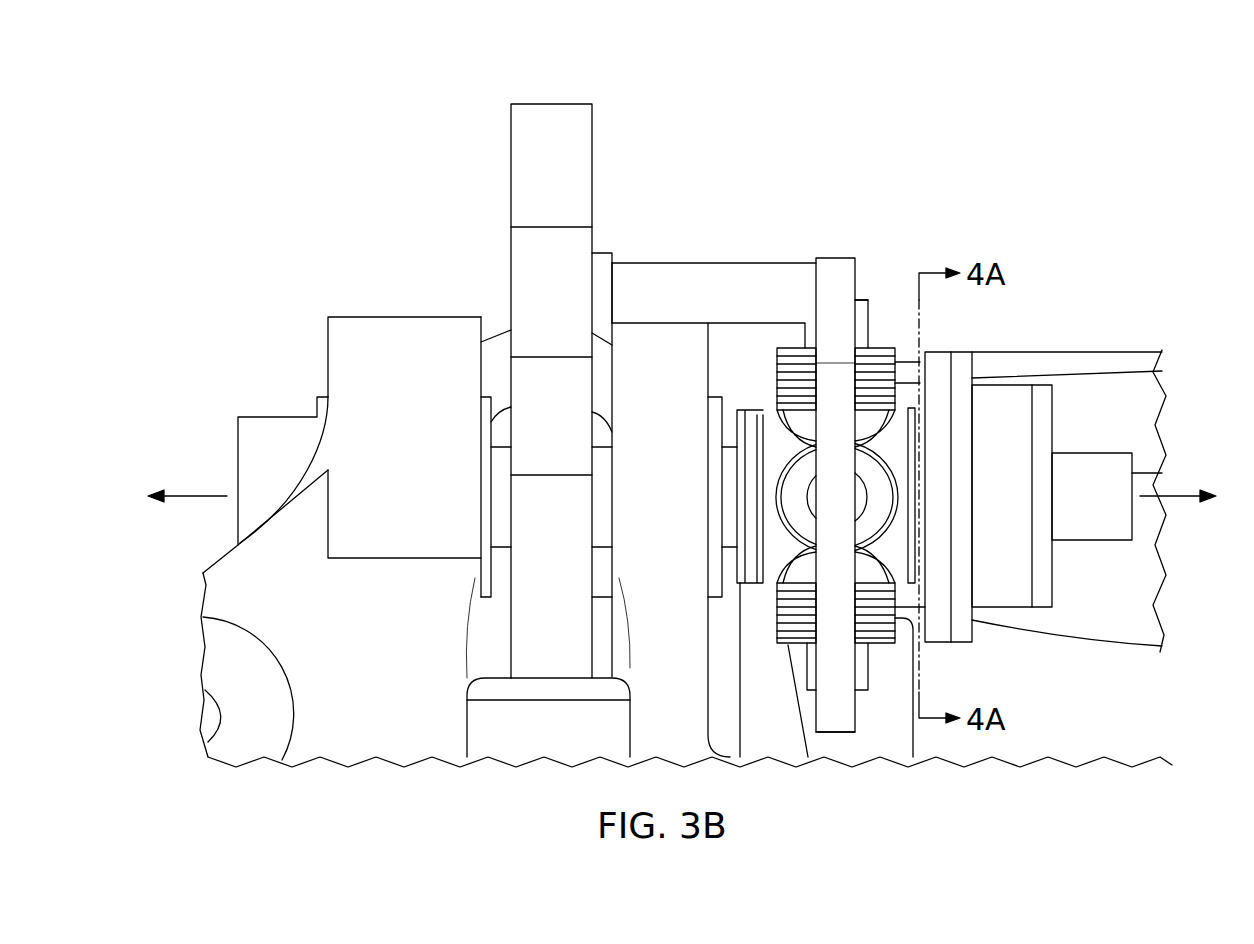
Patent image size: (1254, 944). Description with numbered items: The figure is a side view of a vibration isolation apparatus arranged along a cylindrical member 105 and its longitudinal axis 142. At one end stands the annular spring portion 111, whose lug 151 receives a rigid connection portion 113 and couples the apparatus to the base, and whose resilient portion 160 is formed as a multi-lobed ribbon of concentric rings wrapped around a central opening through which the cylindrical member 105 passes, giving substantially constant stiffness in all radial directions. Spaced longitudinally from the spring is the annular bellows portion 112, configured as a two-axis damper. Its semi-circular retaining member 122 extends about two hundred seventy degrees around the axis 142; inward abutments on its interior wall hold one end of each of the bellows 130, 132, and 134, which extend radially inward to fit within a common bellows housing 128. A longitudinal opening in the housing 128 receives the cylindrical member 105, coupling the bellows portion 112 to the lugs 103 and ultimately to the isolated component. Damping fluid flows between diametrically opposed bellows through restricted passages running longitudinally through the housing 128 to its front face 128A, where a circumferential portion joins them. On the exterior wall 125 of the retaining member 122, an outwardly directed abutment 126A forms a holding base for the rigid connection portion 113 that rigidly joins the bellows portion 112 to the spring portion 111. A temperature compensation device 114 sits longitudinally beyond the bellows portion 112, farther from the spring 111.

The lugs 103 is at (397, 332).
The cylindrical member 105 is at (277, 416).
The annular spring portion 111 is at (486, 101).
The annular bellows portion 112 is at (864, 295).
The rigid connection portions 113 is at (762, 266).
The temperature compensation device 114 is at (1012, 414).
The retaining member 122 is at (838, 722).
The exterior wall 125 is at (872, 630).
The outwardly directed abutment 126A is at (836, 262).
The bellows housing 128 is at (775, 433).
The front face 128A is at (920, 473).
The bellows 130 is at (803, 661).
The bellows 132 is at (790, 497).
The bellows 134 is at (886, 341).
The longitudinal axis 142 is at (190, 496).
The lug 151 is at (563, 104).
The resilient portion 160 is at (518, 617).